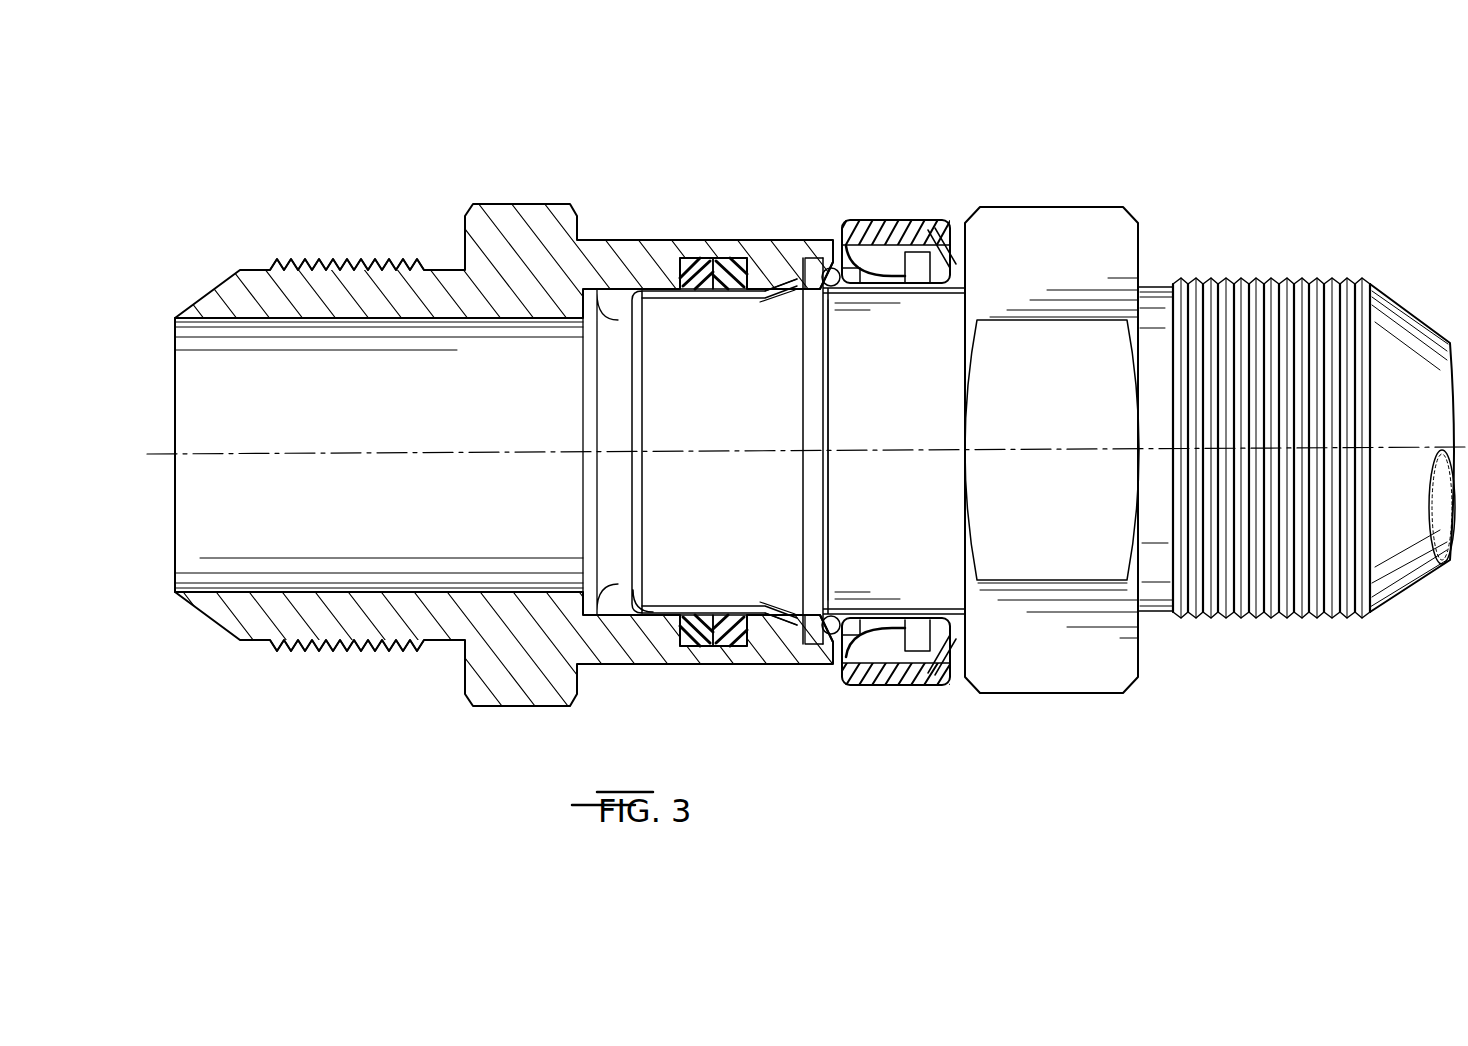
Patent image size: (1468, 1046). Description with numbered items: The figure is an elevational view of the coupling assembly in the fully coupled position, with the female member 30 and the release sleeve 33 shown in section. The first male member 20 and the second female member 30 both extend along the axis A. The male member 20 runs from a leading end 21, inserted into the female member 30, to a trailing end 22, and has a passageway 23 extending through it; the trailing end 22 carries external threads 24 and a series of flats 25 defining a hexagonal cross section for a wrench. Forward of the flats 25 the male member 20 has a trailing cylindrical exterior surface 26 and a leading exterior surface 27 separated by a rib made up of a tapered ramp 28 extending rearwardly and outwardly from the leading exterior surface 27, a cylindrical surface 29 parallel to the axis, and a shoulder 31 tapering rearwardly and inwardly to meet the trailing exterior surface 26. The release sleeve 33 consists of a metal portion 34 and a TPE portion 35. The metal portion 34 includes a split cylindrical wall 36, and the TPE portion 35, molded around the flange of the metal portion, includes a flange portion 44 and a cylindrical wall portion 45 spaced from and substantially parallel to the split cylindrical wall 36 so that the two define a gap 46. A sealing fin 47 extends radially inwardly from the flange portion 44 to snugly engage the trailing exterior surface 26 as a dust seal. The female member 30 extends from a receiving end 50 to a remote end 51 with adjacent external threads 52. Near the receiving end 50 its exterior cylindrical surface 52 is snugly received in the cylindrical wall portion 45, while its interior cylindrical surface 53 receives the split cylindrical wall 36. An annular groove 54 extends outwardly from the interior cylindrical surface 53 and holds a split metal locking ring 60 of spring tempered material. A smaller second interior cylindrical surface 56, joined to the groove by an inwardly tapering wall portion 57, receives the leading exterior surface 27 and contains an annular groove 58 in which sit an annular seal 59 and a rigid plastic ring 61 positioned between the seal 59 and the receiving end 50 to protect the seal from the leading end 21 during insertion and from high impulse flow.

The axis A is at (165, 452).
The first male member 20 is at (1210, 441).
The leading end 21 is at (630, 575).
The trailing end 22 is at (1452, 335).
The passageway 23 is at (1445, 565).
The external threads 24 is at (1248, 277).
The flats 25 is at (1040, 235).
The trailing cylindrical exterior surface 26 is at (897, 630).
The leading exterior surface 27 is at (701, 501).
The tapered ramp 28 is at (775, 315).
The cylindrical surface 29 is at (813, 394).
The second female member 30 is at (487, 168).
The shoulder 31 is at (826, 482).
The release sleeve 33 is at (898, 200).
The metal portion 34 is at (905, 287).
The TPE portion 35 is at (870, 240).
The split cylindrical wall 36 is at (852, 615).
The flange portion 44 is at (895, 674).
The cylindrical wall portion 45 is at (865, 672).
The gap 46 is at (926, 238).
The sealing fin 47 is at (930, 618).
The receiving end 50 is at (829, 268).
The remote end 51 is at (173, 530).
The external threads 52 is at (346, 262).
The interior cylindrical surface 53 is at (850, 292).
The annular groove 54 is at (806, 265).
The second interior cylindrical surface 56 is at (612, 298).
The inwardly tapering wall portion 57 is at (745, 262).
The annular groove 58 is at (690, 647).
The annular seal 59 is at (700, 262).
The split metal locking ring 60 is at (818, 612).
The rigid plastic ring 61 is at (733, 647).